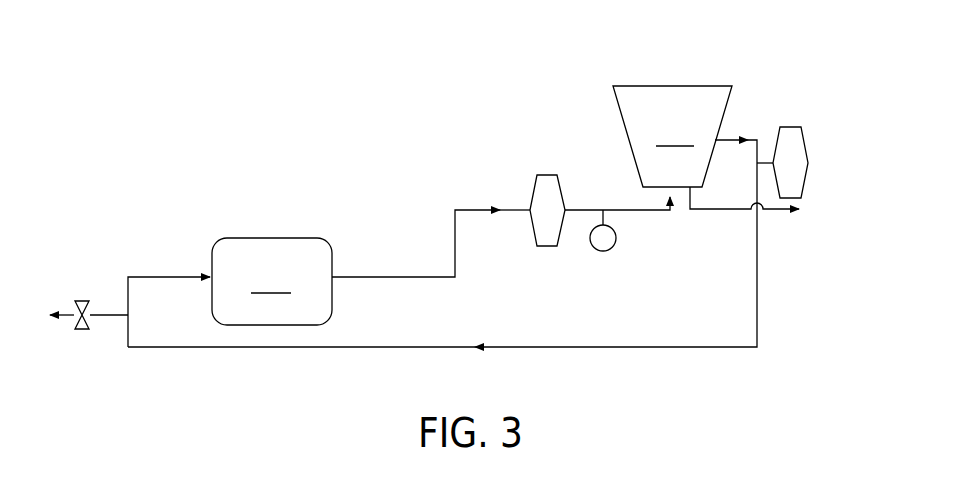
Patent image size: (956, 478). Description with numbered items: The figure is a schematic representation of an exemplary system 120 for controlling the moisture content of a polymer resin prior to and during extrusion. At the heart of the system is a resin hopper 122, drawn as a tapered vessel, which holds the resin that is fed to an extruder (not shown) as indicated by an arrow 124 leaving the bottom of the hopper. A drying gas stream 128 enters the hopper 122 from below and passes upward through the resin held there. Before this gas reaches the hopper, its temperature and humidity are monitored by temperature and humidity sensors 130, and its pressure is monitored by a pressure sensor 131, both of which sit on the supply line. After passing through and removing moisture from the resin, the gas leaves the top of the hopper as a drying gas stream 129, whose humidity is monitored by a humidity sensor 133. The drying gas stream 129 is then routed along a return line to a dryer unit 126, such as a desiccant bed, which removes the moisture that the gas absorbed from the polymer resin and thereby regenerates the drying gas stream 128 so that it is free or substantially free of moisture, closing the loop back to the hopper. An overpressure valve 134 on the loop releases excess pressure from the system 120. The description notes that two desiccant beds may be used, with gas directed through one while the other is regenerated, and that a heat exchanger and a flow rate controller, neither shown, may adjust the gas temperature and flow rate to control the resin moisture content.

The system 120 is at (409, 61).
The resin hopper 122 is at (672, 136).
The arrow 124 is at (782, 212).
The dryer unit 126 is at (272, 281).
The drying gas stream 128 is at (645, 212).
The drying gas stream 129 is at (748, 138).
The temperature and humidity sensors 130 is at (545, 246).
The pressure sensor 131 is at (603, 251).
The humidity sensor 133 is at (808, 160).
The overpressure valve 134 is at (78, 330).